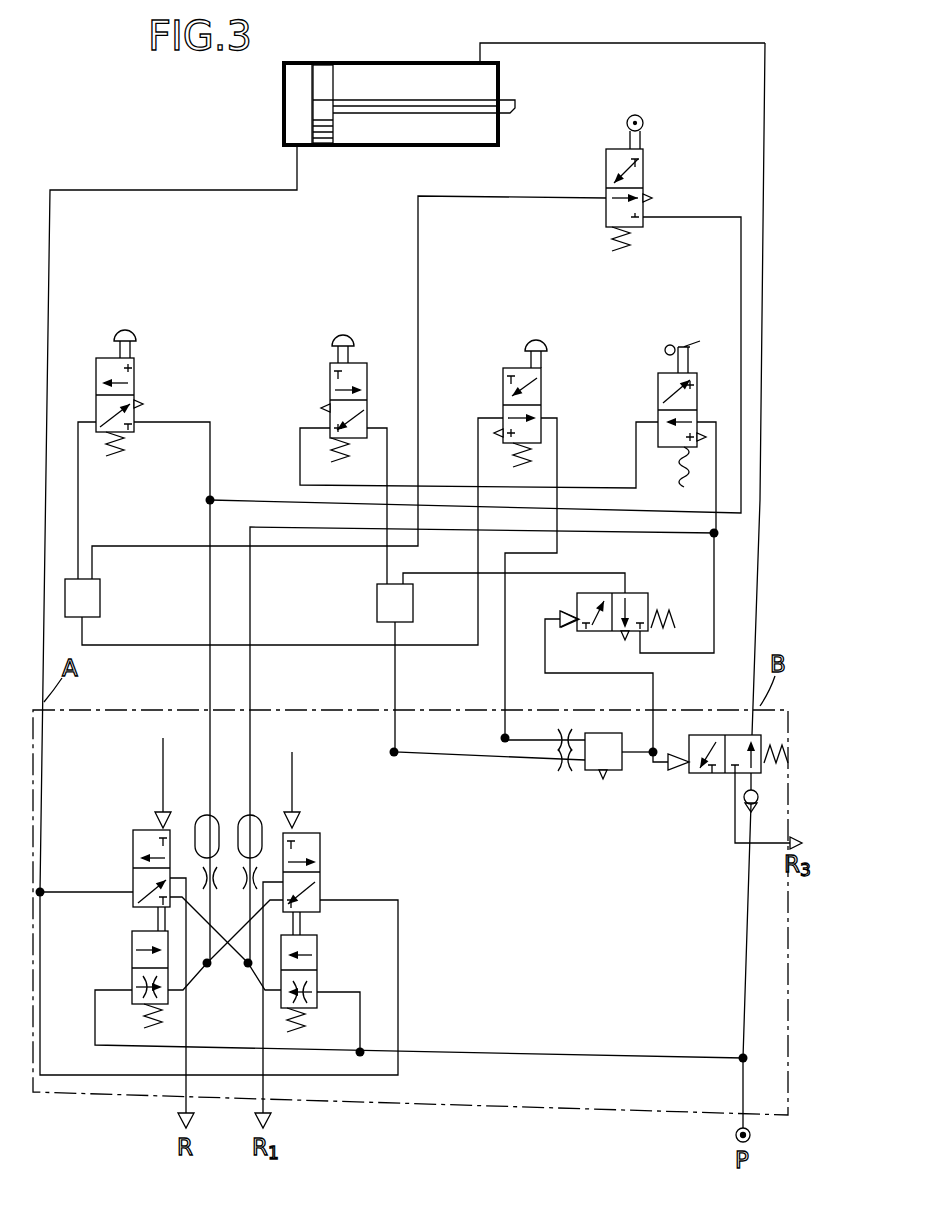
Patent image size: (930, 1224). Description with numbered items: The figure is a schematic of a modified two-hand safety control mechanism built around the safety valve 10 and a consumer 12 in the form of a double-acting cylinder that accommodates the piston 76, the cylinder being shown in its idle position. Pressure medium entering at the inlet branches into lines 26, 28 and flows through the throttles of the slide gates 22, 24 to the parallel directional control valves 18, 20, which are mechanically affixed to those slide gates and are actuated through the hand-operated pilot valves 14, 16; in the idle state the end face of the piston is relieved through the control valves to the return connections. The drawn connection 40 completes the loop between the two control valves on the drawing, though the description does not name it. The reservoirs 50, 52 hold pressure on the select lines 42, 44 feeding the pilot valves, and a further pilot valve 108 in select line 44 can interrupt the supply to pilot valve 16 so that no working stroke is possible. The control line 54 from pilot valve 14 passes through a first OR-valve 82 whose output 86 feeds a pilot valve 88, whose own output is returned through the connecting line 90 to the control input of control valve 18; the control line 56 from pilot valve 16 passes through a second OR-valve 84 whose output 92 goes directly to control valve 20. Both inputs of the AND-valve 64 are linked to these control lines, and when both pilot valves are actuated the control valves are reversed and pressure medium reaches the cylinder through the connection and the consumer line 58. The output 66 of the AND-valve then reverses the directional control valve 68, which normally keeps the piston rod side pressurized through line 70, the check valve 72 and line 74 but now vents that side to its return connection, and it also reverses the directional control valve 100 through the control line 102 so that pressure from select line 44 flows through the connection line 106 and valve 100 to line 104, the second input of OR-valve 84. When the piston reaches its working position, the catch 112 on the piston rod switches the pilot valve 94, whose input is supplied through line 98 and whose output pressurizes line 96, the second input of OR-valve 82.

The safety valve 10 is at (123, 821).
The consumer 12 is at (391, 60).
The pilot valve 14 is at (103, 360).
The pilot valve 16 is at (330, 374).
The directional control valve 18 is at (132, 845).
The directional control valve 20 is at (320, 842).
The slide gate 22 is at (132, 952).
The slide gate 24 is at (318, 946).
The line 26 is at (449, 1058).
The line 28 is at (360, 1030).
The connecting line 40 is at (398, 962).
The select line 42 is at (176, 422).
The select line 44 is at (300, 450).
The reservoir 50 is at (193, 818).
The reservoir 52 is at (264, 820).
The control line 54 is at (78, 472).
The control line 56 is at (385, 418).
The consumer line 58 is at (152, 184).
The AND-valve 64 is at (584, 776).
The output of AND-valve 66 is at (634, 769).
The directional control valve 68 is at (702, 780).
The line 70 is at (742, 893).
The check valve 72 is at (750, 803).
The line 74 is at (533, 42).
The piston 76 is at (321, 65).
The OR-valve 82 is at (68, 589).
The OR-valve 84 is at (377, 612).
The output of OR-valve 86 is at (134, 644).
The pilot valve 88 is at (514, 371).
The connecting line 90 is at (558, 441).
The output of OR-valve 92 is at (387, 696).
The pilot valve 94 is at (643, 156).
The line 96 is at (522, 194).
The line 98 is at (741, 241).
The directional control valve 100 is at (648, 601).
The control line 102 is at (654, 674).
The line 104 is at (547, 575).
The connection line 106 is at (738, 608).
The pilot valve 108 is at (666, 375).
The catch 112 is at (516, 118).